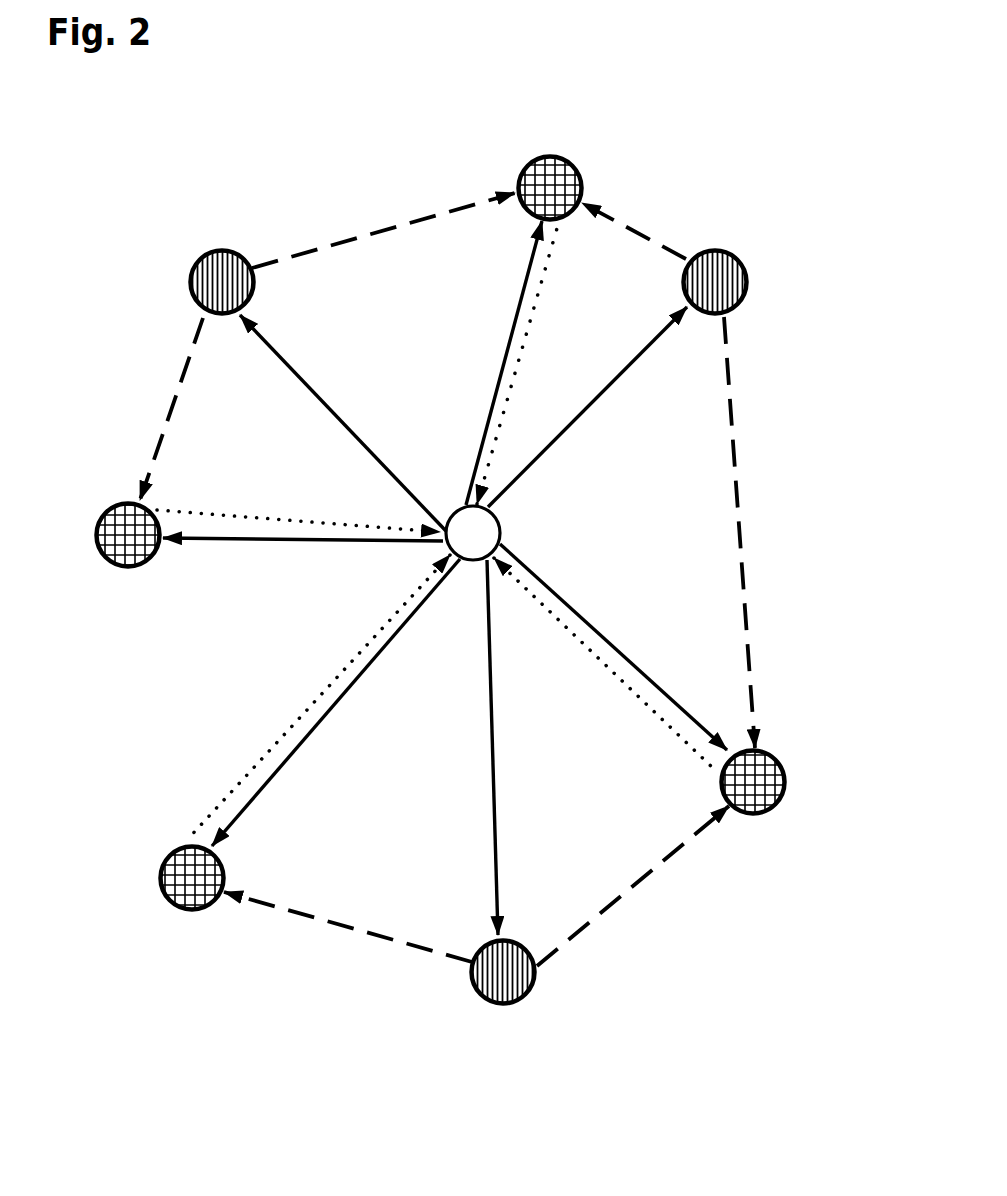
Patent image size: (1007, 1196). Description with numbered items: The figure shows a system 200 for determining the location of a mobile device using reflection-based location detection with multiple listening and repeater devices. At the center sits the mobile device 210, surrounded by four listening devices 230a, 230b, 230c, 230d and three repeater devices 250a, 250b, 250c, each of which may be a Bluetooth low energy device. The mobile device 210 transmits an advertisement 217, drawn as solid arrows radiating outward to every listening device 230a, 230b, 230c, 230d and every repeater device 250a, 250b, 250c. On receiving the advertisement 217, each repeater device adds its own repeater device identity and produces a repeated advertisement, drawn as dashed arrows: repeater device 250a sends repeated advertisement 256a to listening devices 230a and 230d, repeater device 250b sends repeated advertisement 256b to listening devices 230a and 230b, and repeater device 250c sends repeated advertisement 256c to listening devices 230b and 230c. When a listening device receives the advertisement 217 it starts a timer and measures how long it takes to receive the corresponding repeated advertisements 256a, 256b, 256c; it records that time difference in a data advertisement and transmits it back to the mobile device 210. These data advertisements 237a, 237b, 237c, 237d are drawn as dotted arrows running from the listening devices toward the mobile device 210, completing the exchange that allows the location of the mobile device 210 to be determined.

The system 200 is at (803, 74).
The mobile device 210 is at (473, 533).
The advertisement 217 is at (502, 337).
The listening device 230a is at (576, 166).
The listening device 230b is at (784, 757).
The listening device 230c is at (164, 911).
The listening device 230d is at (109, 567).
The data advertisement 237a is at (528, 363).
The data advertisement 237b is at (659, 723).
The data advertisement 237c is at (314, 689).
The data advertisement 237d is at (286, 519).
The repeater device 250a is at (241, 246).
The repeater device 250b is at (746, 260).
The repeater device 250c is at (472, 997).
The repeated advertisement 256a is at (419, 206).
The repeated advertisement 256b is at (646, 231).
The repeated advertisement 256c is at (324, 931).